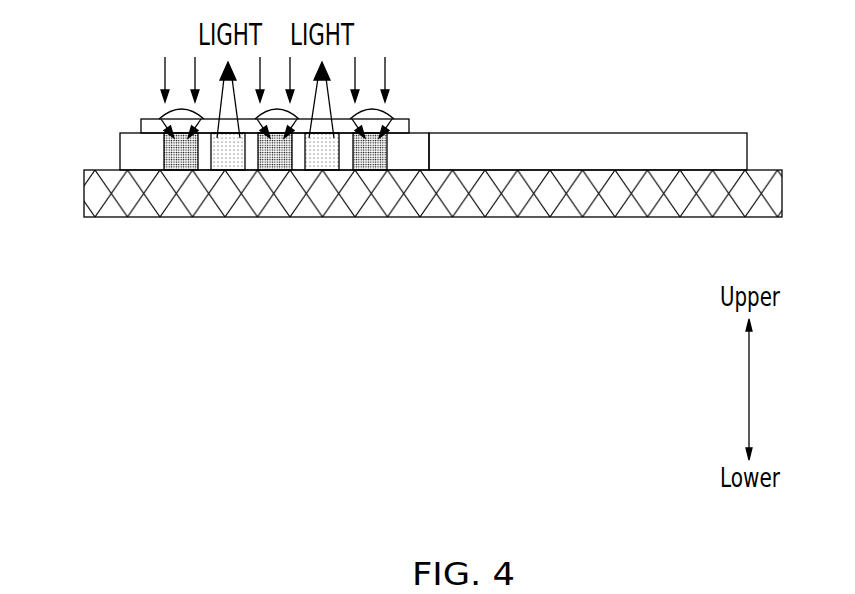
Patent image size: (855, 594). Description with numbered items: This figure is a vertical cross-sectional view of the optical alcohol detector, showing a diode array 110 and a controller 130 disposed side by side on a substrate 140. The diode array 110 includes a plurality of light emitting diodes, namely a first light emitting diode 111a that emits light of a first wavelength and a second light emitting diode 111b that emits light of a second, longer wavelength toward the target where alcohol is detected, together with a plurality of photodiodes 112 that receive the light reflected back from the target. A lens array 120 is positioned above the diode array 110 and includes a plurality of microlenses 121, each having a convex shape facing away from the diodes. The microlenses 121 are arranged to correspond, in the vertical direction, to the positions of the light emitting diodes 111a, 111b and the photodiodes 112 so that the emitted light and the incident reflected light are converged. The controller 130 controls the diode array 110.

The diode array 110 is at (100, 355).
The first light emitting diode 111a is at (232, 162).
The second light emitting diode 111b is at (322, 163).
The photodiode 112 is at (182, 163).
The lens array 120 is at (119, 124).
The microlens 121 is at (170, 117).
The controller 130 is at (590, 145).
The substrate 140 is at (502, 205).